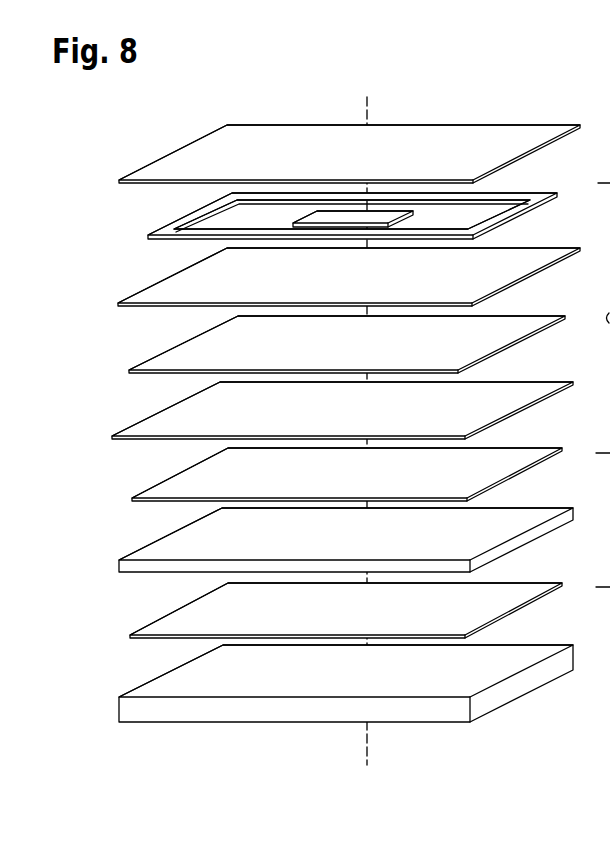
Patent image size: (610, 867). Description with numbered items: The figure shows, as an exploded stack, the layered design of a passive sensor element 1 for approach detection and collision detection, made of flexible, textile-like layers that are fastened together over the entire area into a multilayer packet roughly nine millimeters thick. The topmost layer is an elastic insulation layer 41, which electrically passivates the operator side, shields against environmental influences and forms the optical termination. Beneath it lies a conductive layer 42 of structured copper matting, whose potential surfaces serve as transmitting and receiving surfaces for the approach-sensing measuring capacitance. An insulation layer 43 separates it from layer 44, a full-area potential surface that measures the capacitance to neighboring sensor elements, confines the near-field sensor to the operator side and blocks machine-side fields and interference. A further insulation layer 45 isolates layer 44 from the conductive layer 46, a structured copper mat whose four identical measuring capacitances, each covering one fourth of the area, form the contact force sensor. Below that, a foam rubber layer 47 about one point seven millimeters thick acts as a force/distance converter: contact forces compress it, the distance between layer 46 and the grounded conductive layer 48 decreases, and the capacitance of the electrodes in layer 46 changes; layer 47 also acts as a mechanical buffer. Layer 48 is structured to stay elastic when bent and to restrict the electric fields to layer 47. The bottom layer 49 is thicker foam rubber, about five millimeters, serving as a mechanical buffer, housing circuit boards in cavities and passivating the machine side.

The sensor element 1 is at (268, 106).
The elastic insulation layer 41 is at (195, 165).
The conductive layer 42 is at (175, 224).
The insulation layer 43 is at (195, 290).
The full-area potential surface 44 is at (195, 354).
The insulation layer 45 is at (195, 417).
The conductive layer 46 is at (195, 484).
The foam rubber layer 47 is at (195, 547).
The conductive layer 48 is at (195, 622).
The foam rubber layer 49 is at (195, 684).